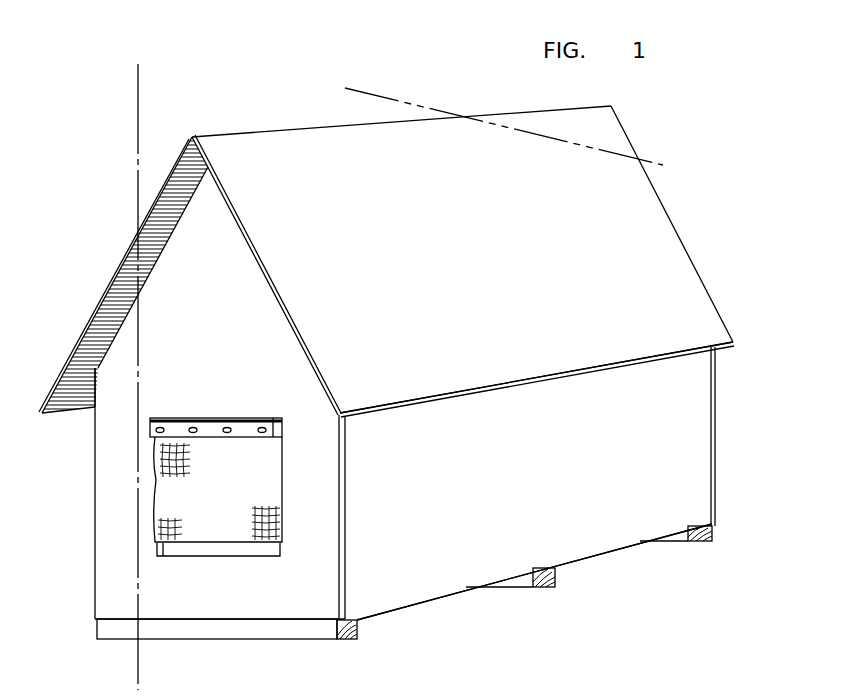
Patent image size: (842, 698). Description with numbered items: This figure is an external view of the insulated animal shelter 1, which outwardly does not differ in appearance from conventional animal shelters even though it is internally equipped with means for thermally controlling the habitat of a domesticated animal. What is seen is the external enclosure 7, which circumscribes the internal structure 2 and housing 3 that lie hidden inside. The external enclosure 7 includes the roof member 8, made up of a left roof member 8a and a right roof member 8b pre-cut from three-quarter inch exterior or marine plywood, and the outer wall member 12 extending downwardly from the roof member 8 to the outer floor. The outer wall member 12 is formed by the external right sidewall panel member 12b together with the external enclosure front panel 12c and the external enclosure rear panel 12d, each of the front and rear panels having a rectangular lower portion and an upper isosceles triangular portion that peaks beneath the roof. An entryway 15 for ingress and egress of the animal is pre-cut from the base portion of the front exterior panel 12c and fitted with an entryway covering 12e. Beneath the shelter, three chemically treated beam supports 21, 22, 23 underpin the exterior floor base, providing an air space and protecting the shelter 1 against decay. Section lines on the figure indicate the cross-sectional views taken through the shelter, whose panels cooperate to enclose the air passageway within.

The animal shelter 1 is at (400, 491).
The internal structure 2 is at (322, 95).
The housing 3 is at (172, 71).
The external enclosure 7 is at (590, 396).
The roof member 8 is at (391, 261).
The left roof member 8a is at (90, 322).
The right roof member 8b is at (678, 296).
The outer wall member 12 is at (583, 537).
The external right sidewall panel member 12b is at (437, 568).
The external enclosure front panel 12c is at (110, 458).
The external enclosure rear panel 12d is at (717, 418).
The entryway covering 12e is at (254, 463).
The housing entryway 15 is at (212, 545).
The beam support 21 is at (362, 623).
The beam support 22 is at (556, 570).
The beam support 23 is at (712, 530).